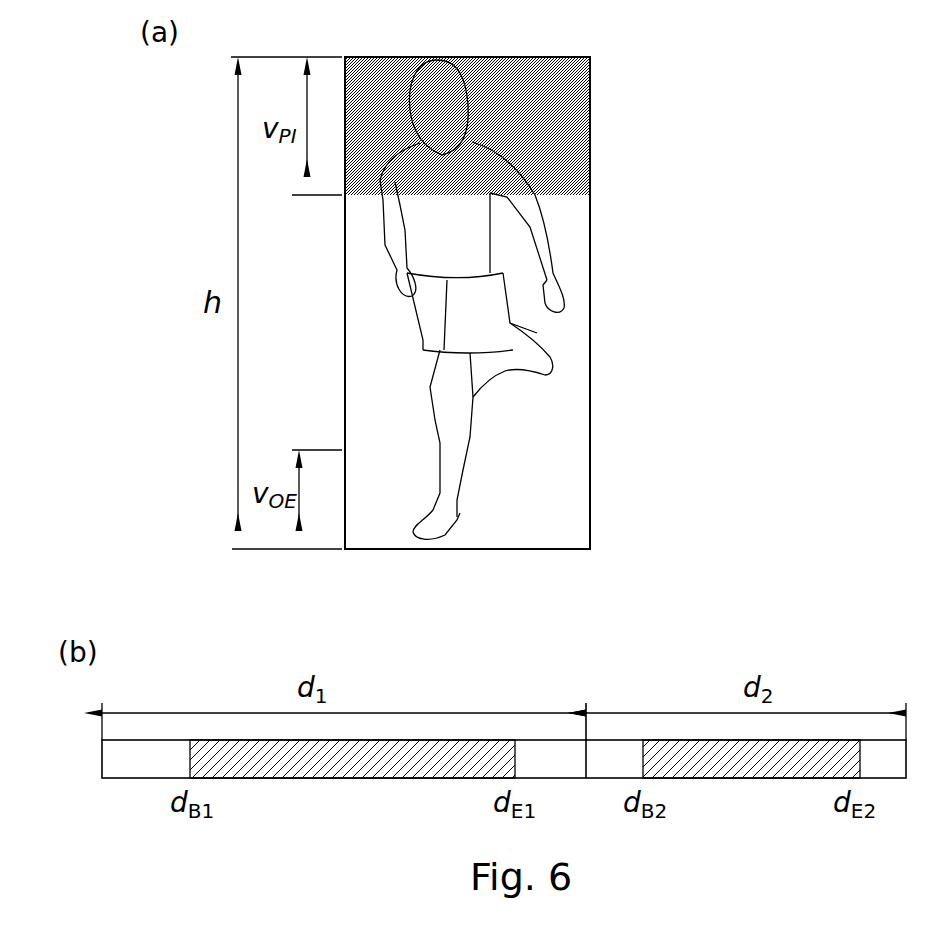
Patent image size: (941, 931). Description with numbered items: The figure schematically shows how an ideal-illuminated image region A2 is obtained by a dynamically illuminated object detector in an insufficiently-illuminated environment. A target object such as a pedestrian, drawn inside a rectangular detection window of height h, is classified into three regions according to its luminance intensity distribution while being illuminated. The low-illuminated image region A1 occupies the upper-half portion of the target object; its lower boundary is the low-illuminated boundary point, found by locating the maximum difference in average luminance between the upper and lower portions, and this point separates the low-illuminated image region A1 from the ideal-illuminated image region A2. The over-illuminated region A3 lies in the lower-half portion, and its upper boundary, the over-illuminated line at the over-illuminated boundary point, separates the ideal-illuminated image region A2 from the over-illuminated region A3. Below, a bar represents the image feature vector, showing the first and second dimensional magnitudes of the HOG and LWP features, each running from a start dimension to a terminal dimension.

The low-illuminated image region A1 is at (607, 57).
The ideal-illuminated image region A2 is at (607, 195).
The over-illuminated region A3 is at (607, 455).